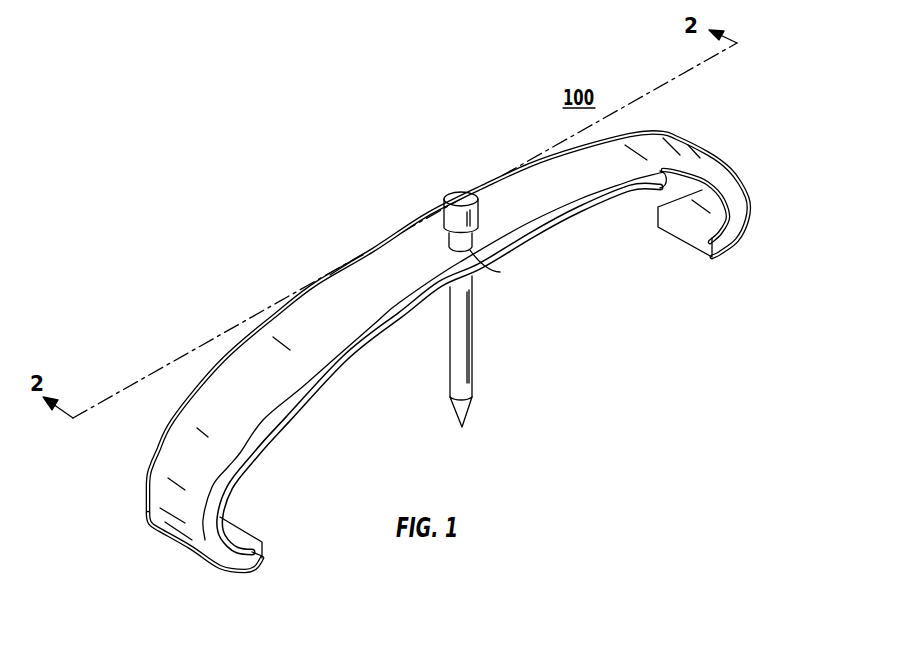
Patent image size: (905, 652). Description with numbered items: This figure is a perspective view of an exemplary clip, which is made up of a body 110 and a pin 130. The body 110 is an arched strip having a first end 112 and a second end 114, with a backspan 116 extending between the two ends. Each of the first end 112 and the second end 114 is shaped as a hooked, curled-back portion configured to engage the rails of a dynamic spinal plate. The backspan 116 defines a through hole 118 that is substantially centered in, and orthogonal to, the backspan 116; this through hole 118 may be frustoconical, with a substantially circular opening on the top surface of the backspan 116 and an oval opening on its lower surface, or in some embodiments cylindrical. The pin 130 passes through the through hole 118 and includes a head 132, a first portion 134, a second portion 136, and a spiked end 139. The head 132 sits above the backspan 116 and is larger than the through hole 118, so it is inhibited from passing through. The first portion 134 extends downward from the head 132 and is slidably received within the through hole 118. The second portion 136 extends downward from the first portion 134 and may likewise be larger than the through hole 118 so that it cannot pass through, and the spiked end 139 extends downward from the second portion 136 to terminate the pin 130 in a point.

The body 110 is at (542, 172).
The first end 112 is at (185, 543).
The second end 114 is at (743, 200).
The backspan 116 is at (363, 268).
The through hole 118 is at (500, 272).
The pin 130 is at (493, 308).
The head 132 is at (453, 197).
The first portion 134 is at (470, 239).
The second portion 136 is at (473, 375).
The spiked end 139 is at (462, 428).